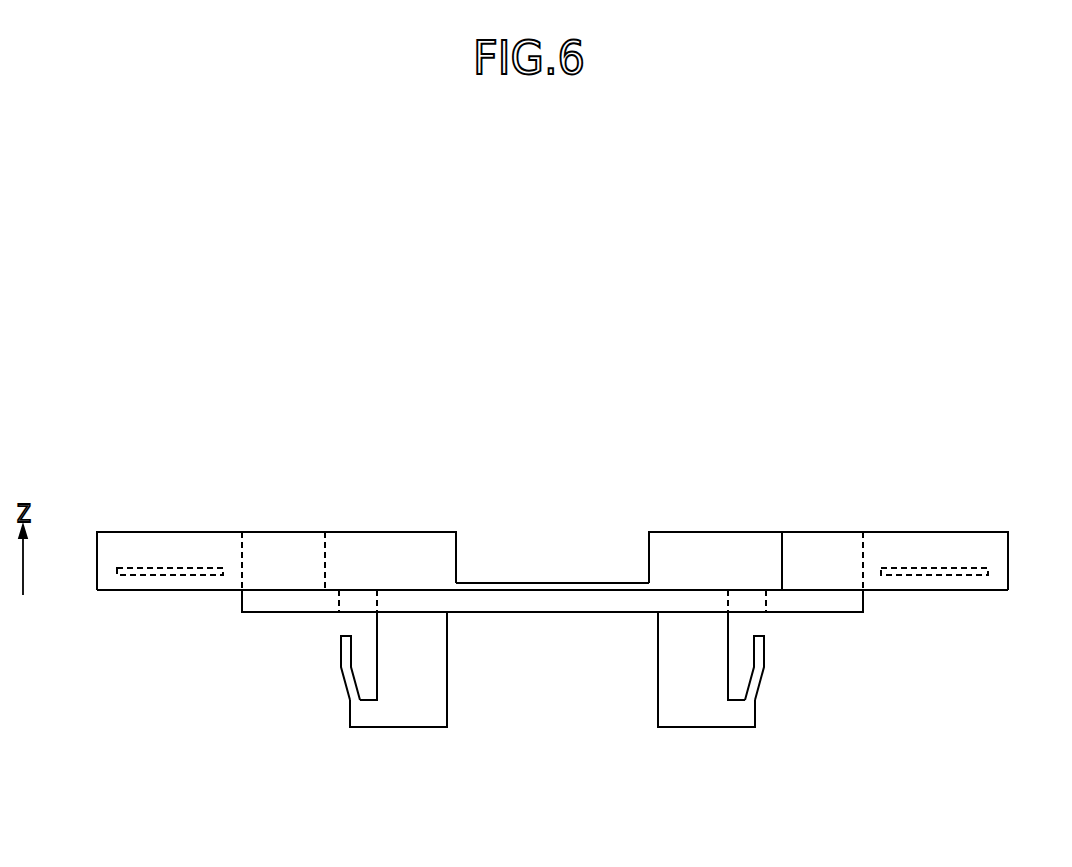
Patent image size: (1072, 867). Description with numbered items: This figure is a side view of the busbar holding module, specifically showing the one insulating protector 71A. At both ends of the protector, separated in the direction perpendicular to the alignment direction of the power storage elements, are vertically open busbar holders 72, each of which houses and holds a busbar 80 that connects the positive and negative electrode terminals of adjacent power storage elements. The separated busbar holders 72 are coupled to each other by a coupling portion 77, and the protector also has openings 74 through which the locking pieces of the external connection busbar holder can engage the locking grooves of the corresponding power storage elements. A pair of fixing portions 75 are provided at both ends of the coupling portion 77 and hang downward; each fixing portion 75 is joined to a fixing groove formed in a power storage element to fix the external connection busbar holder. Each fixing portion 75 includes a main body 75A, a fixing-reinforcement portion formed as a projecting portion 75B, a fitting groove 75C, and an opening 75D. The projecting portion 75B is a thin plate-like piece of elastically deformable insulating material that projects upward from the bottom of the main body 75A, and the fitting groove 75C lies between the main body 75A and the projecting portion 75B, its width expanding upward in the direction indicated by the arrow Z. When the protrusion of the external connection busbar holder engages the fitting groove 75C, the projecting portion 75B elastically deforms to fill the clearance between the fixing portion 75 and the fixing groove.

The insulating protector 71A is at (561, 552).
The busbar holder 72 is at (140, 532).
The opening 74 is at (325, 566).
The fixing portion 75 is at (552, 645).
The main body 75A is at (427, 705).
The projecting portion 75B is at (347, 648).
The fitting groove 75C is at (368, 660).
The opening 75D is at (377, 608).
The coupling portion 77 is at (527, 582).
The busbar 80 is at (170, 568).